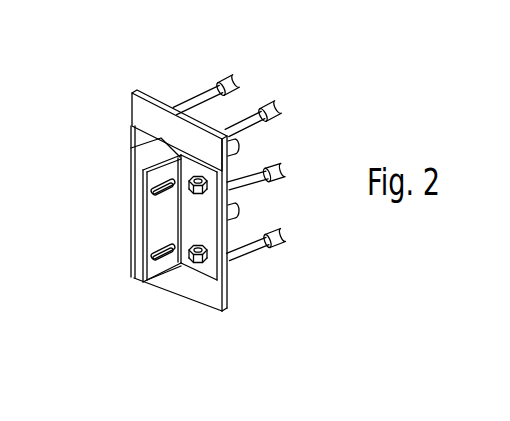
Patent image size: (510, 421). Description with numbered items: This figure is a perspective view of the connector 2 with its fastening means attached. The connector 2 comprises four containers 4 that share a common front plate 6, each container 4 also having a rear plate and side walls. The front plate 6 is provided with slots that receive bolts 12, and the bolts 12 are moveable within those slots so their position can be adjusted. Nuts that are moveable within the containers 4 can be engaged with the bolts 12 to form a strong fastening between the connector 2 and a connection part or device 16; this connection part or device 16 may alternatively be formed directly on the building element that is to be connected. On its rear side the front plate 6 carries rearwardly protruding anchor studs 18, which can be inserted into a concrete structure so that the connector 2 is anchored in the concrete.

The connector 2 is at (218, 326).
The container 4 is at (236, 168).
The front plate 6 is at (139, 110).
The bolt 12 is at (146, 144).
The connection part or device 16 is at (240, 210).
The anchor stud 18 is at (225, 74).